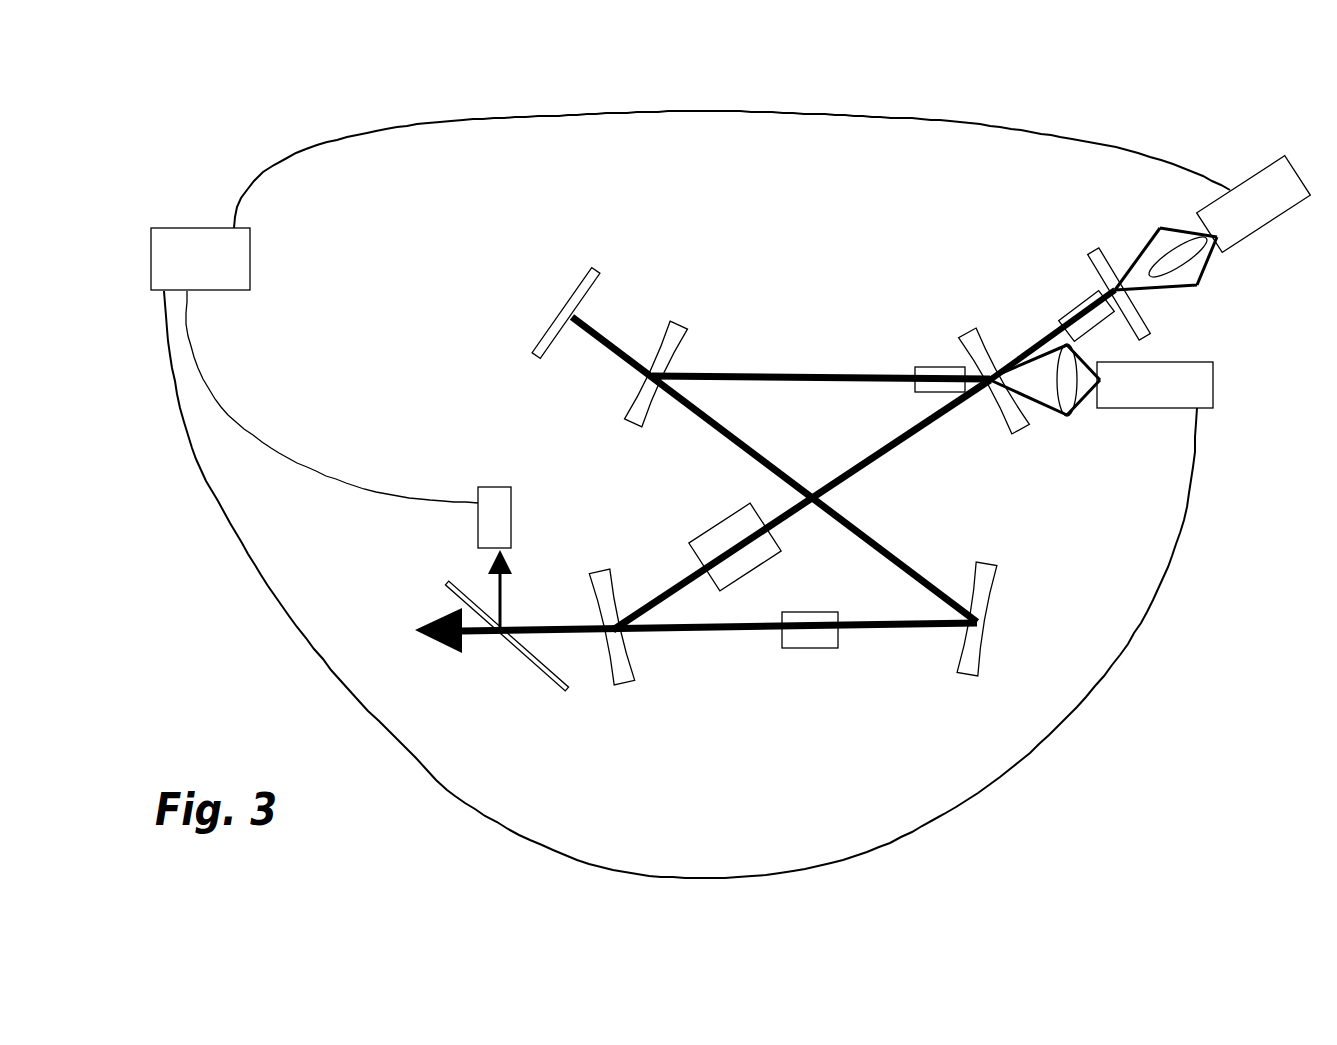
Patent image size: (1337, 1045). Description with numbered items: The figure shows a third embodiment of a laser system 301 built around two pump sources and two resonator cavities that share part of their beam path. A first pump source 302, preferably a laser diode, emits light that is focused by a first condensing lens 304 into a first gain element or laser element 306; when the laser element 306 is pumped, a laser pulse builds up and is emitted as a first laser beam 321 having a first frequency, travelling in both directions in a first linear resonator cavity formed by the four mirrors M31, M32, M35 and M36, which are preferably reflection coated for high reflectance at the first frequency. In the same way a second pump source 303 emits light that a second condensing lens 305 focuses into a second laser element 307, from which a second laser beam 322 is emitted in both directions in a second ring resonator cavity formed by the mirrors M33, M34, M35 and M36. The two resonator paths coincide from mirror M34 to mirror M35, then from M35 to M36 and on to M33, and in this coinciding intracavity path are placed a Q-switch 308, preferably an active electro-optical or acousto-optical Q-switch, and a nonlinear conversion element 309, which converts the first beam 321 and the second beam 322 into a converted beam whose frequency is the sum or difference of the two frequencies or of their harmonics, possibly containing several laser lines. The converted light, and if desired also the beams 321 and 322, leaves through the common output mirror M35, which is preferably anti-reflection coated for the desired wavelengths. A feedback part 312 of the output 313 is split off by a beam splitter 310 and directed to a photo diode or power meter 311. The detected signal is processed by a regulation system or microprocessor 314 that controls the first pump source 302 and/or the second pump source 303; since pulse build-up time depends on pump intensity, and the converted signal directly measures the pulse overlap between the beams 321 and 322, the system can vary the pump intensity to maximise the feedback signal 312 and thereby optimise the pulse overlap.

The laser system 301 is at (1010, 72).
The first pump source 302 is at (1285, 182).
The second pump source 303 is at (1200, 390).
The first condensing lens 304 is at (1199, 283).
The second condensing lens 305 is at (1068, 416).
The first laser element 306 is at (1072, 313).
The second laser element 307 is at (938, 368).
The Q-switch 308 is at (713, 530).
The nonlinear conversion element 309 is at (836, 643).
The beam splitter 310 is at (533, 660).
The photo diode or power meter 311 is at (497, 497).
The feedback part 312 is at (502, 605).
The output 313 is at (468, 637).
The regulation system or microprocessor 314 is at (237, 272).
The first laser beam 321 is at (598, 327).
The second laser beam 322 is at (753, 375).
The mirror M31 is at (573, 302).
The mirror M32 is at (1095, 248).
The mirror M33 is at (628, 410).
The mirror M34 is at (1013, 432).
The common output mirror M35 is at (623, 673).
The mirror M36 is at (972, 665).